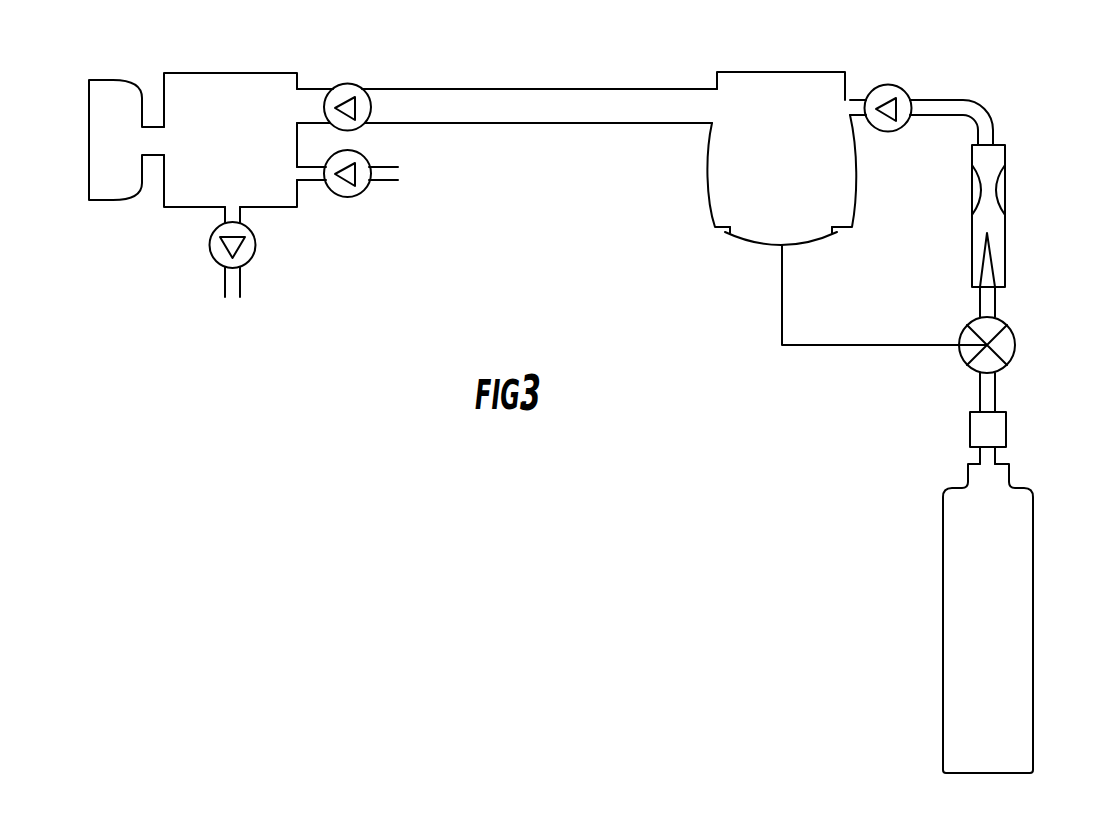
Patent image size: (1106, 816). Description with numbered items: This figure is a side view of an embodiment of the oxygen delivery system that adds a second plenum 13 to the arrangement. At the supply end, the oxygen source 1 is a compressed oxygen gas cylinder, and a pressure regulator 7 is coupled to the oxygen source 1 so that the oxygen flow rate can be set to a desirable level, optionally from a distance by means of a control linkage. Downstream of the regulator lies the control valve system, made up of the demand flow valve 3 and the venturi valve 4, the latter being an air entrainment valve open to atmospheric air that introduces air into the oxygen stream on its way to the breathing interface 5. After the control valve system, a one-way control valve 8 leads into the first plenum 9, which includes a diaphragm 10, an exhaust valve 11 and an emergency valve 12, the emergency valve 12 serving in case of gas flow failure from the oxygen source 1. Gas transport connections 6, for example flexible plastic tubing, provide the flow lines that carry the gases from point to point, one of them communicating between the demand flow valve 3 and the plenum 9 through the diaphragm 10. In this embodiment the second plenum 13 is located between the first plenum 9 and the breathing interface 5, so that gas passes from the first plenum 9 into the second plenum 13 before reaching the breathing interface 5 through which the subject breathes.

The oxygen source 1 is at (1014, 634).
The demand flow valve 3 is at (960, 330).
The venturi valve 4 is at (1007, 237).
The breathing interface 5 is at (88, 150).
The gas transport connections 6 is at (545, 73).
The pressure regulator 7 is at (968, 432).
The one-way control valve 8 is at (357, 86).
The plenum 9 is at (847, 208).
The diaphragm 10 is at (727, 234).
The exhaust valve 11 is at (210, 249).
The emergency valve 12 is at (350, 196).
The second plenum 13 is at (230, 140).